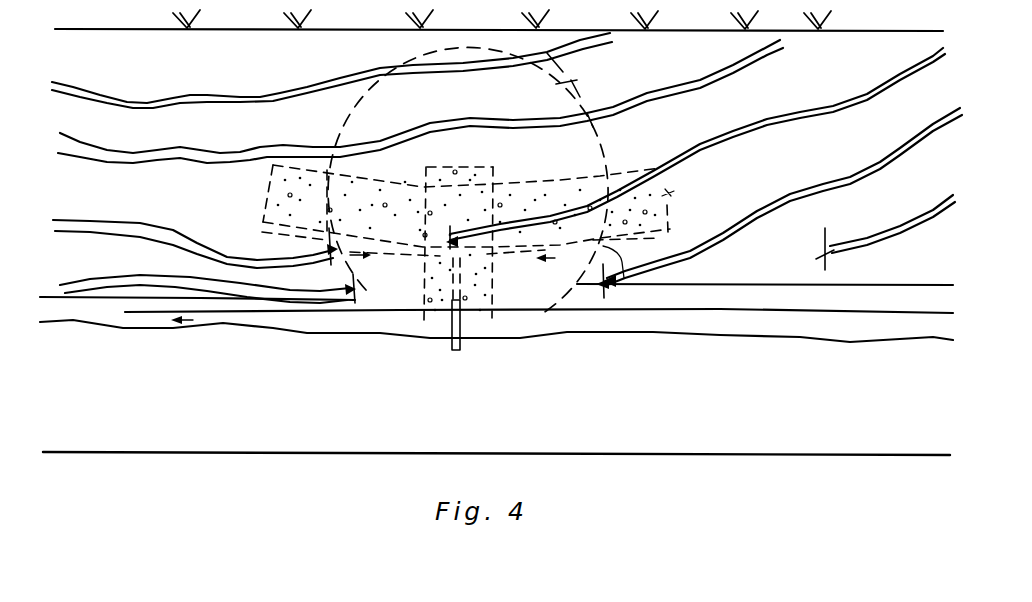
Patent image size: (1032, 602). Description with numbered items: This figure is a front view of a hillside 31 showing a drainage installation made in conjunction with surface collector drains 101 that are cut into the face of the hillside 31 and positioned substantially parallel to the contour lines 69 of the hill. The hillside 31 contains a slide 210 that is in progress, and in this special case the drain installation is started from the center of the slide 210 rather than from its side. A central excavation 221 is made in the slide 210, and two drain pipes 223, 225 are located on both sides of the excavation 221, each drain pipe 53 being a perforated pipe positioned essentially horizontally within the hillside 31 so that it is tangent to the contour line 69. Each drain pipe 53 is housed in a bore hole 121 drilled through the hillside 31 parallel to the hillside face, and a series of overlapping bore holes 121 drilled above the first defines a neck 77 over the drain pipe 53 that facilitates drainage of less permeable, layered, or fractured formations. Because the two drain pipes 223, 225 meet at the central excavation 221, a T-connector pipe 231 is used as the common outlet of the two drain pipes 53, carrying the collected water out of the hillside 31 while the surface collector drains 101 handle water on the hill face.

The surface collector drains 101 is at (227, 97).
The slide 210 is at (578, 83).
The neck 77 is at (670, 190).
The drain pipe 53 is at (657, 232).
The drain pipe 223 is at (375, 239).
The drain pipe 225 is at (533, 243).
The excavation 221 is at (427, 255).
The bore hole 121 is at (616, 287).
The contour line 69 is at (223, 300).
The T-connector pipe 231 is at (462, 301).
The hillside 31 is at (738, 336).